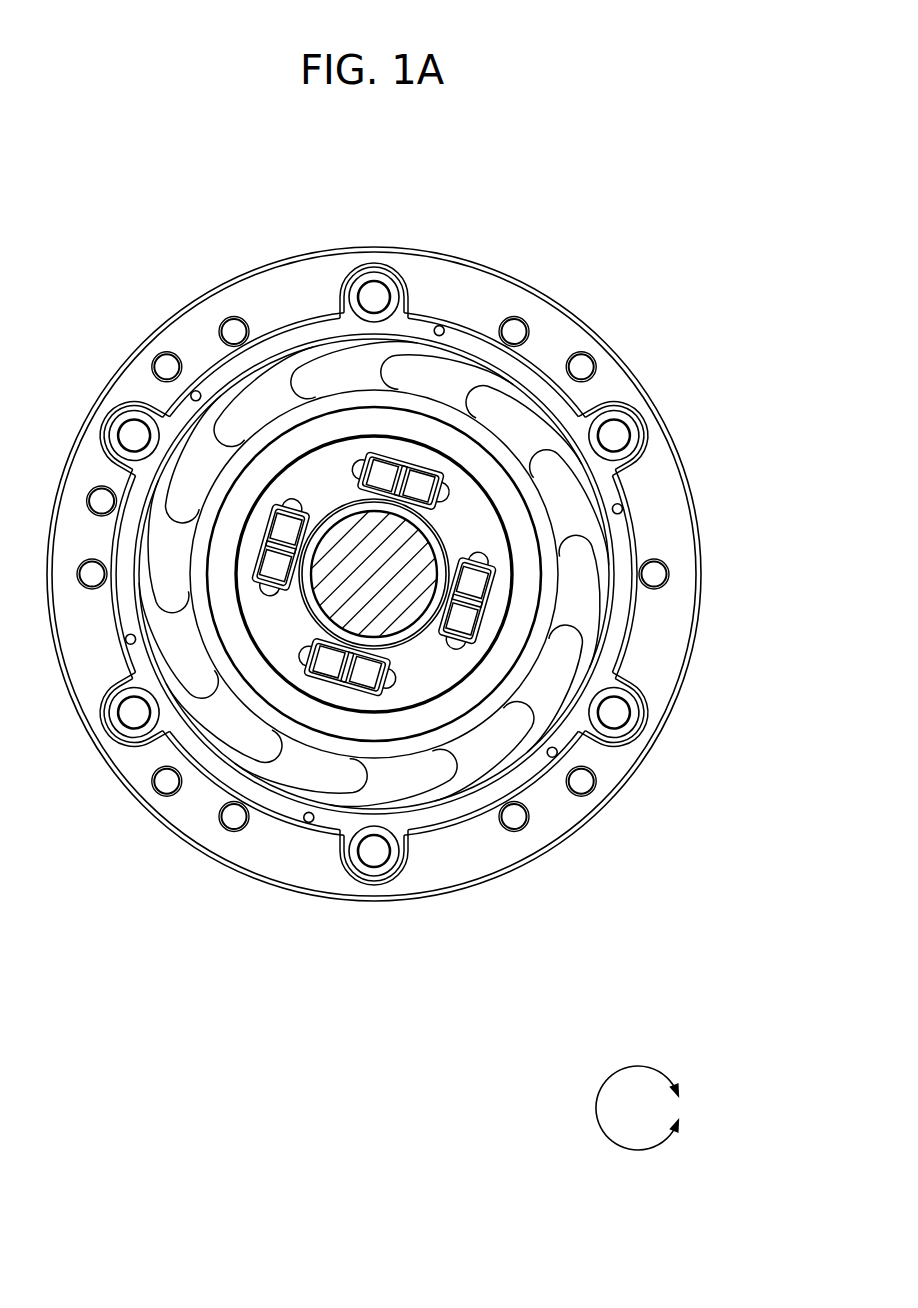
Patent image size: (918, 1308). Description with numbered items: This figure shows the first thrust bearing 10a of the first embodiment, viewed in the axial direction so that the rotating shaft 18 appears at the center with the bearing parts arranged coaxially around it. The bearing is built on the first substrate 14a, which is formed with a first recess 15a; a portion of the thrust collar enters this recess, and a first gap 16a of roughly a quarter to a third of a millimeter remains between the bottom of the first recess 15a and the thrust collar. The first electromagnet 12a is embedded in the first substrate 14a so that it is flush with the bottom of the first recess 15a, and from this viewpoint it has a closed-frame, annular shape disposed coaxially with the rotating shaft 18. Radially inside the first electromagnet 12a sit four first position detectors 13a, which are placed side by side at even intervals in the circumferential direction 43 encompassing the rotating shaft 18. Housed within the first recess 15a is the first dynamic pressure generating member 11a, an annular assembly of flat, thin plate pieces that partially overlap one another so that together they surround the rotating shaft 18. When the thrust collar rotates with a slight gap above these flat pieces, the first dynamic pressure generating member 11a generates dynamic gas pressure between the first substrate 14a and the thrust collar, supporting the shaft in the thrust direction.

The first thrust bearing 10a is at (592, 203).
The first dynamic pressure generating member 11a is at (445, 385).
The first electromagnet 12a is at (517, 517).
The first position detector 13a is at (383, 452).
The first substrate 14a is at (668, 540).
The first recess 15a is at (622, 607).
The first gap 16a is at (483, 743).
The rotating shaft 18 is at (330, 598).
The circumferential direction 43 is at (636, 1066).